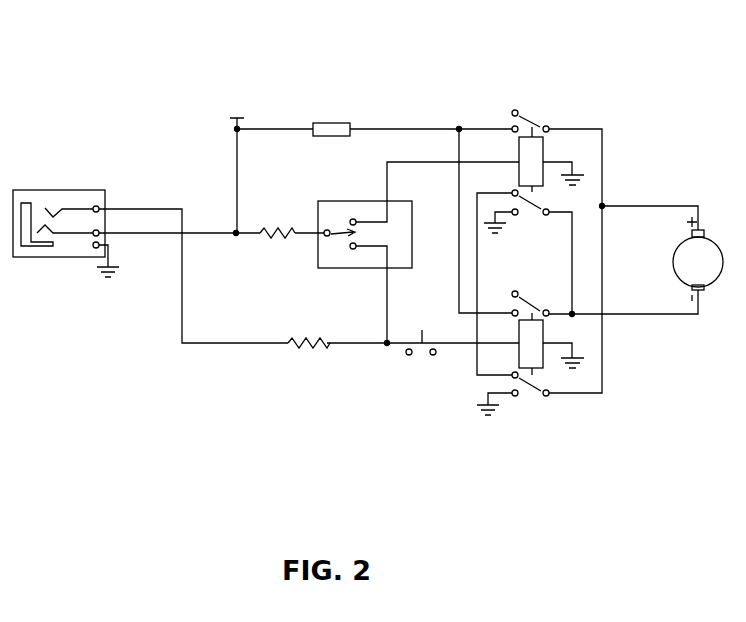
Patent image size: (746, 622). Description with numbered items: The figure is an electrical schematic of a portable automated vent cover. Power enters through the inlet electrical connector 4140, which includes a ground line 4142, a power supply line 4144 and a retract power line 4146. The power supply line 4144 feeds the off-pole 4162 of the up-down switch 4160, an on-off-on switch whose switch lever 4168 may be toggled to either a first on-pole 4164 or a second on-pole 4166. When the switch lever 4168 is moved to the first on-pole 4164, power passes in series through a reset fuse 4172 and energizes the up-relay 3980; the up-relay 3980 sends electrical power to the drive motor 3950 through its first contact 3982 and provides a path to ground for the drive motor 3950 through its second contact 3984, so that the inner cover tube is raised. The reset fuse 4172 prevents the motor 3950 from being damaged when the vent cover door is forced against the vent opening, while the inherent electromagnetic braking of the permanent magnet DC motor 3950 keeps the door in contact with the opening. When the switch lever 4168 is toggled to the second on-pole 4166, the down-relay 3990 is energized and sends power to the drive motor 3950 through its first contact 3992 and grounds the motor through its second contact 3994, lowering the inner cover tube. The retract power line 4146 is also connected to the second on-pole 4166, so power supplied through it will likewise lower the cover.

The inlet electrical connector 4140 is at (38, 190).
The ground line 4142 is at (48, 246).
The power supply line 4144 is at (72, 248).
The retract power line 4146 is at (80, 207).
The up-down switch 4160 is at (355, 268).
The off-pole 4162 is at (326, 237).
The first on-pole 4164 is at (353, 219).
The second on-pole 4166 is at (355, 249).
The switch lever 4168 is at (337, 220).
The reset fuse 4172 is at (327, 122).
The up-relay 3980 is at (543, 150).
The first contact 3982 is at (522, 120).
The second contact 3984 is at (528, 207).
The drive motor 3950 is at (717, 280).
The down-relay 3990 is at (550, 373).
The first contact 3992 is at (537, 293).
The second contact 3994 is at (533, 395).